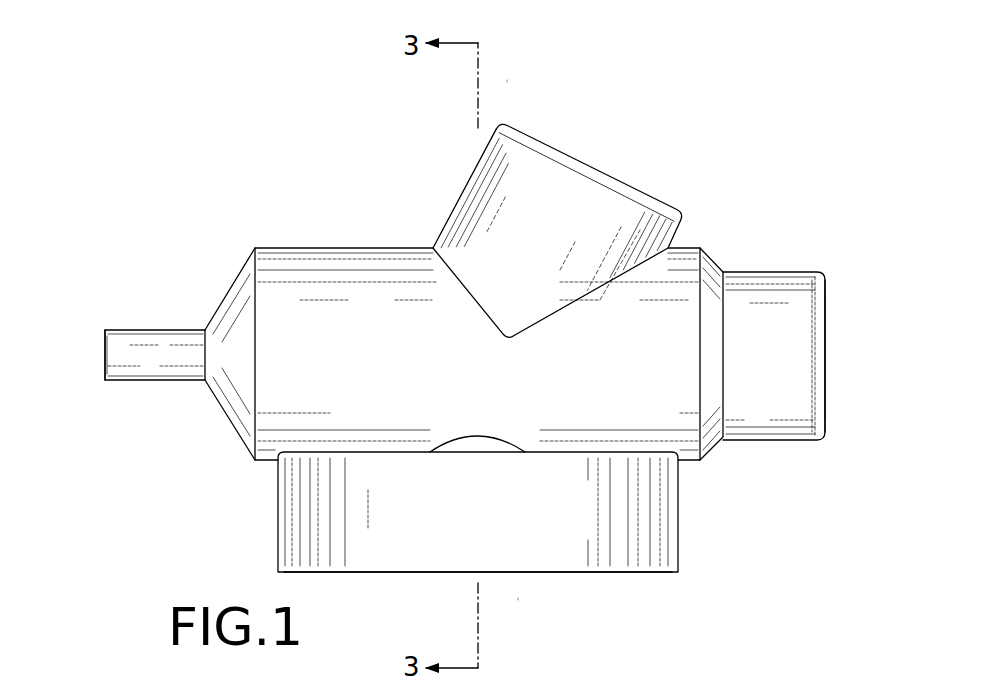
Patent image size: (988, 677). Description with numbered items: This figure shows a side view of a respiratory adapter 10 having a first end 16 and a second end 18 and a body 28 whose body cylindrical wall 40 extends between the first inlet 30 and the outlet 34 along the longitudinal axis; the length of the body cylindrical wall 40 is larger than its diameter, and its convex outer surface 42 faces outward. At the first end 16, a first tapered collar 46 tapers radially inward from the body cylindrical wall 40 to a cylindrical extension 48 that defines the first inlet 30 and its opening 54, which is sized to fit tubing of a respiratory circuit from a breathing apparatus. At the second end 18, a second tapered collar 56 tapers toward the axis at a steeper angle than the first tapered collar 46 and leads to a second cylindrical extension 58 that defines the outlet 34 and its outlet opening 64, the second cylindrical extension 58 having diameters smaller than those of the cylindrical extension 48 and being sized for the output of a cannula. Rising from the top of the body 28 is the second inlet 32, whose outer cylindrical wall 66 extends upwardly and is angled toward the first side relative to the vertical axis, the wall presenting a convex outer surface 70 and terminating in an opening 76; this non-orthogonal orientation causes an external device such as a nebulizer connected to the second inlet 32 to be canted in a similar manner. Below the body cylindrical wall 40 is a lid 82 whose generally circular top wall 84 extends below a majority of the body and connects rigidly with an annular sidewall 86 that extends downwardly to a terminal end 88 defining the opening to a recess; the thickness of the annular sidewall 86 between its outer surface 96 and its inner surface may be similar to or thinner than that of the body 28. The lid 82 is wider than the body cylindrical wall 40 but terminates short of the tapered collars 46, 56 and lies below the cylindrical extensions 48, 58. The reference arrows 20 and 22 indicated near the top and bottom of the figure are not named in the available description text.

The adapter 10 is at (719, 62).
The first end 16 is at (838, 294).
The second end 18 is at (81, 352).
The first axis / branch outlet direction 20 is at (507, 77).
The second axis / drain direction 22 is at (519, 603).
The body 28 is at (425, 313).
The body cylindrical wall 40 is at (309, 244).
The first inlet 30 is at (828, 388).
The second inlet 32 is at (588, 156).
The outlet 34 is at (102, 362).
The convex outer surface 42 is at (623, 371).
The first tapered collar 46 is at (713, 257).
The cylindrical extension 48 is at (786, 267).
The opening 54 is at (827, 347).
The second tapered collar 56 is at (229, 296).
The second cylindrical extension 58 is at (155, 331).
The outlet opening 64 is at (102, 348).
The outer cylindrical wall 66 is at (464, 174).
The convex outer surface 70 is at (565, 249).
The opening 76 is at (634, 182).
The lid 82 is at (393, 515).
The annular sidewall 86 is at (276, 512).
The circular top wall 84 is at (389, 452).
The terminal end 88 is at (550, 573).
The outer surface 96 is at (497, 527).